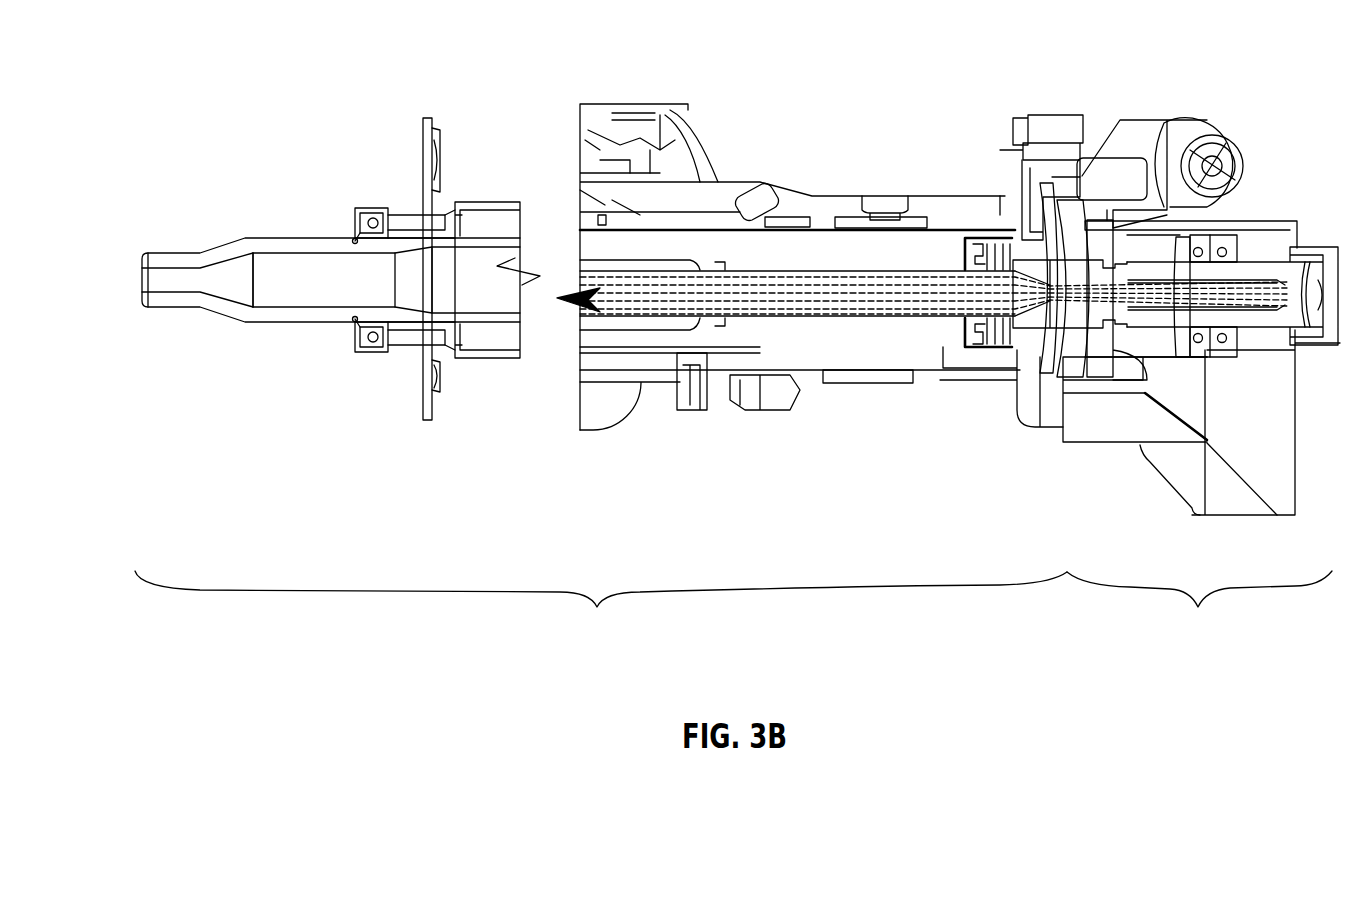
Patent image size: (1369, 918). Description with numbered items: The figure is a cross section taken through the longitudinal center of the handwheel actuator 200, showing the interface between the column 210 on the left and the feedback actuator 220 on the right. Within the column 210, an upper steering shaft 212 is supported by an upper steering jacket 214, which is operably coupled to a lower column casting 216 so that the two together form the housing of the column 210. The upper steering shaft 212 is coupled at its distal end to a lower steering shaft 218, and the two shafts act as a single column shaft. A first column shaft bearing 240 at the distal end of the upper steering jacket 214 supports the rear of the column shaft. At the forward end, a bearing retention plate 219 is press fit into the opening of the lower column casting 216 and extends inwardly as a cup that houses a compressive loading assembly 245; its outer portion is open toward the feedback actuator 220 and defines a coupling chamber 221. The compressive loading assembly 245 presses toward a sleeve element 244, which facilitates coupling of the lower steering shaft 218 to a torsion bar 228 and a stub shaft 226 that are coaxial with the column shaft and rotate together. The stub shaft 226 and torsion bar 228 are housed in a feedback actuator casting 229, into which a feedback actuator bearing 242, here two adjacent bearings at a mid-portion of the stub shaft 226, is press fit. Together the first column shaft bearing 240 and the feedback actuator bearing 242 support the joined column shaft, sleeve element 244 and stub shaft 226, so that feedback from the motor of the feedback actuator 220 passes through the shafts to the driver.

The handwheel actuator 200 is at (362, 100).
The column 210 is at (601, 607).
The upper steering shaft 212 is at (232, 238).
The upper steering jacket 214 is at (470, 360).
The lower column casting 216 is at (855, 213).
The lower steering shaft 218 is at (766, 385).
The bearing retention plate 219 is at (1000, 372).
The feedback actuator 220 is at (1199, 607).
The coupling chamber 221 is at (1023, 237).
The stub shaft 226 is at (1143, 395).
The torsion bar 228 is at (1287, 297).
The feedback actuator casting 229 is at (1290, 418).
The first column shaft bearing 240 is at (370, 350).
The feedback actuator bearing 242 is at (1207, 445).
The sleeve element 244 is at (1080, 268).
The compressive loading assembly 245 is at (975, 318).